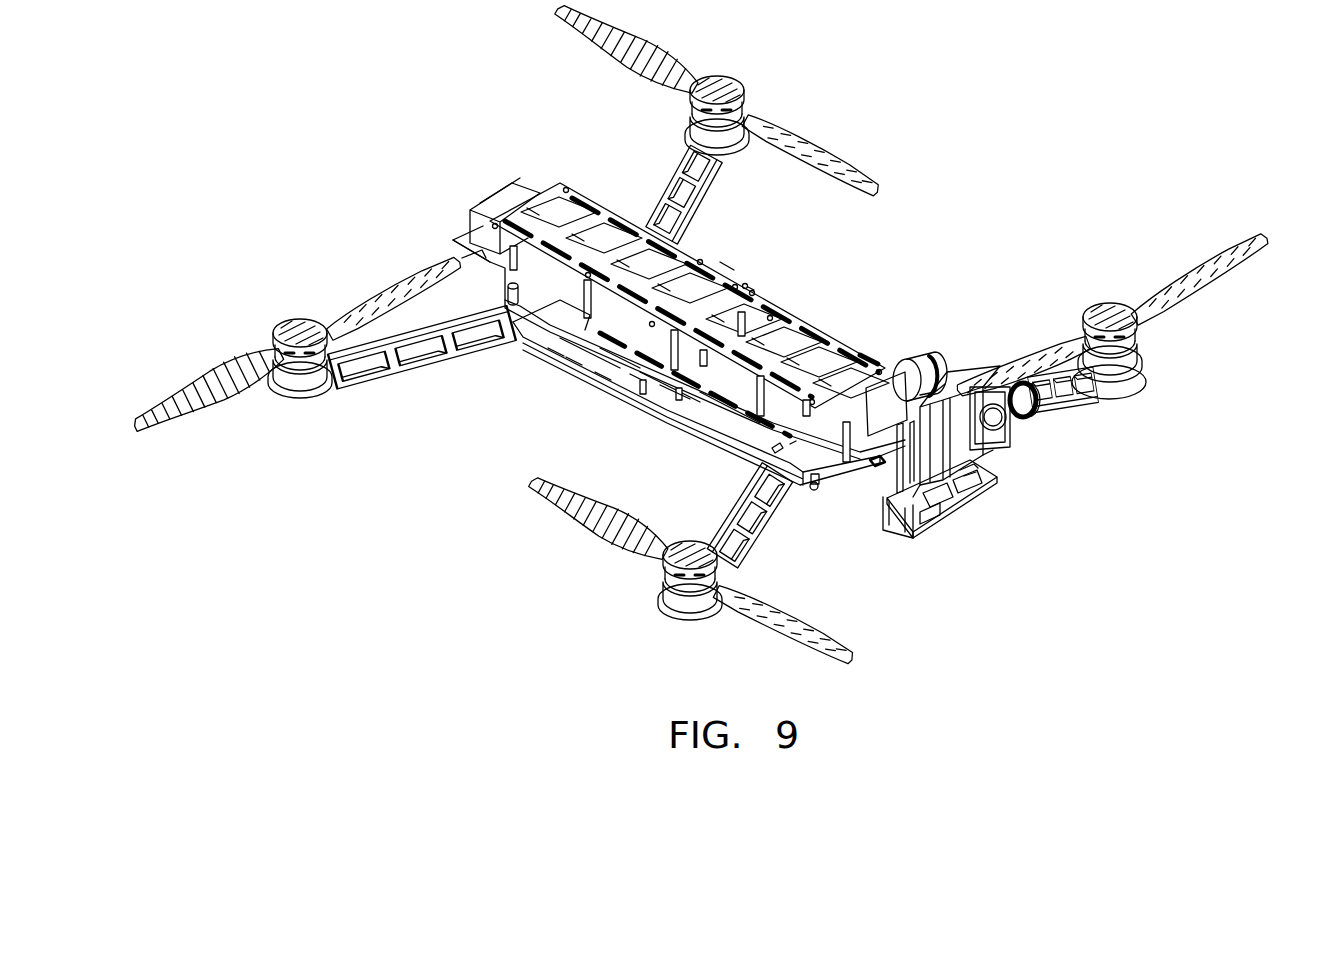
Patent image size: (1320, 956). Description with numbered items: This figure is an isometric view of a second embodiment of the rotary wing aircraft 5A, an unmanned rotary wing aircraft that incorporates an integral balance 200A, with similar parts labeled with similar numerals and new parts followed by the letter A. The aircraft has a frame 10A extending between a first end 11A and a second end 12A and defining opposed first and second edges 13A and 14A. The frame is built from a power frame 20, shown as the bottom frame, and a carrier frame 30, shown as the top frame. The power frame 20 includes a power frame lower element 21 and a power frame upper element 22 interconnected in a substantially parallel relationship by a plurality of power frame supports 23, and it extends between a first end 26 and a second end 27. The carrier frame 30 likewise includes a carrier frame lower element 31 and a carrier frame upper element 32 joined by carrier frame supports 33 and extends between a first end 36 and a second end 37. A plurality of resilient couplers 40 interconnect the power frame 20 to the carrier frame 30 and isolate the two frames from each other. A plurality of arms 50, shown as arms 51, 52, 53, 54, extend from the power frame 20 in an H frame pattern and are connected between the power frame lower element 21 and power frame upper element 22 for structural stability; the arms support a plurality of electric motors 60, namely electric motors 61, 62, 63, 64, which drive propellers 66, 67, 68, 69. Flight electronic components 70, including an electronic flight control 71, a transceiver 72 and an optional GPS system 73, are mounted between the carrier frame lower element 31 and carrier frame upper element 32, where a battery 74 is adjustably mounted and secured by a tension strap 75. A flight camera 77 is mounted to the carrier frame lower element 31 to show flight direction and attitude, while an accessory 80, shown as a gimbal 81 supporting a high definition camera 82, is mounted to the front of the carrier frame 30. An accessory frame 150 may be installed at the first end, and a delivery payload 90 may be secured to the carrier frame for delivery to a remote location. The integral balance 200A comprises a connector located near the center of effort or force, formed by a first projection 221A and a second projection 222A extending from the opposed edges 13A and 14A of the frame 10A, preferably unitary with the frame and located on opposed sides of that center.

The rotary wing aircraft 5A is at (408, 108).
The frame 10A is at (561, 184).
The first end 11A is at (988, 485).
The second end 12A is at (476, 237).
The first edge 13A is at (729, 393).
The second edge 14A is at (788, 308).
The power frame 20 is at (580, 363).
The power frame lower element 21 is at (562, 351).
The power frame upper element 22 is at (607, 368).
The first projection 221A is at (640, 379).
The power frame supports 23 is at (640, 387).
The first end of power frame 26 is at (816, 490).
The second end of power frame 27 is at (507, 303).
The carrier frame 30 is at (754, 290).
The carrier frame lower element 31 is at (880, 475).
The carrier frame upper element 32 is at (870, 357).
The carrier frame supports 33 is at (462, 263).
The first end of carrier frame 36 is at (978, 463).
The second end of carrier frame 37 is at (557, 189).
The resilient couplers 40 is at (678, 400).
The plurality of arms 50 is at (816, 570).
The arm 51 is at (760, 548).
The arm 52 is at (448, 357).
The arm 53 is at (1097, 390).
The arm 54 is at (650, 192).
The plurality of electric motors 60 is at (620, 649).
The electric motor 61 is at (696, 600).
The electric motor 62 is at (297, 382).
The electric motor 63 is at (1140, 352).
The electric motor 64 is at (692, 131).
The propeller 66 is at (570, 513).
The propeller 67 is at (232, 398).
The propeller 68 is at (1175, 283).
The propeller 69 is at (798, 132).
The flight electronic components 70 is at (810, 238).
The electronic flight control 71 is at (872, 250).
The transceiver 72 is at (890, 272).
The GPS system 73 is at (907, 300).
The battery 74 is at (492, 190).
The tension strap 75 is at (528, 210).
The flight camera 77 is at (933, 518).
The accessory 80 is at (1056, 479).
The gimbal 81 is at (951, 380).
The high definition camera 82 is at (996, 418).
The delivery payload 90 is at (1046, 557).
The accessory frame 150 is at (1070, 466).
The integral balance 200A is at (725, 258).
The second projection 222A is at (744, 282).